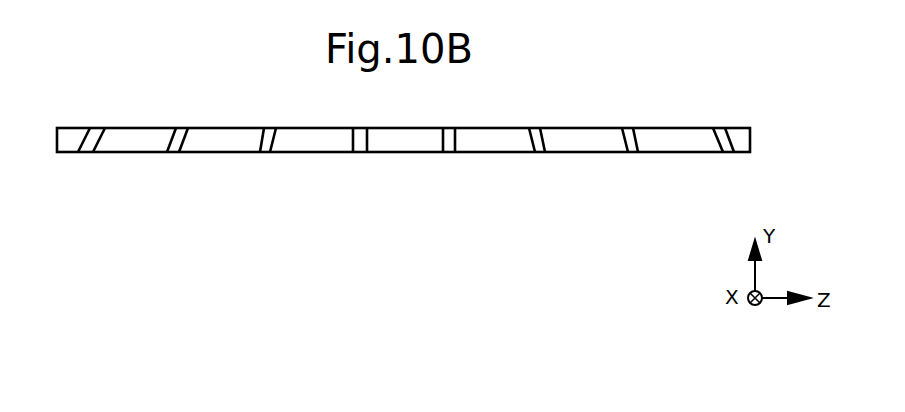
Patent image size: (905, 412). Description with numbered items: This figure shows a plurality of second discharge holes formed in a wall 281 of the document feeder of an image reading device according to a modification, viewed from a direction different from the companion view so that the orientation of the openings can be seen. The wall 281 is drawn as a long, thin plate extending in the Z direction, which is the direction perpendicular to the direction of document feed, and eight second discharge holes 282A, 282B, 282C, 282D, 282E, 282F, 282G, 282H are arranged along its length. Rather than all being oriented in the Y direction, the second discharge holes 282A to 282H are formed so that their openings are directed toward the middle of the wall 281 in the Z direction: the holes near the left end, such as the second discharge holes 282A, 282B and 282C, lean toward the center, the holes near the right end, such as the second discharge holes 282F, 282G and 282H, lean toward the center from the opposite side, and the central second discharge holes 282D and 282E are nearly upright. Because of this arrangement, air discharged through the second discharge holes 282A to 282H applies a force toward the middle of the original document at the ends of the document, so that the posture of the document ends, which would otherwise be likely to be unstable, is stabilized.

The wall 281 is at (752, 148).
The second discharge hole 282A is at (105, 128).
The second discharge hole 282B is at (188, 128).
The second discharge hole 282C is at (277, 128).
The second discharge hole 282D is at (367, 128).
The second discharge hole 282E is at (455, 128).
The second discharge hole 282F is at (543, 128).
The second discharge hole 282G is at (633, 128).
The second discharge hole 282H is at (724, 128).